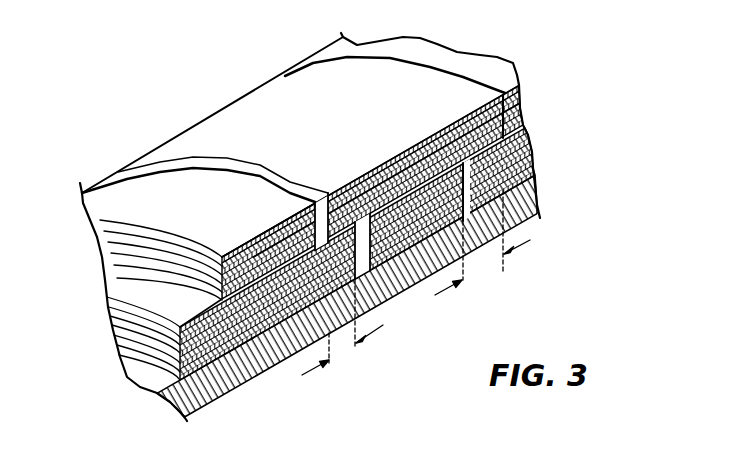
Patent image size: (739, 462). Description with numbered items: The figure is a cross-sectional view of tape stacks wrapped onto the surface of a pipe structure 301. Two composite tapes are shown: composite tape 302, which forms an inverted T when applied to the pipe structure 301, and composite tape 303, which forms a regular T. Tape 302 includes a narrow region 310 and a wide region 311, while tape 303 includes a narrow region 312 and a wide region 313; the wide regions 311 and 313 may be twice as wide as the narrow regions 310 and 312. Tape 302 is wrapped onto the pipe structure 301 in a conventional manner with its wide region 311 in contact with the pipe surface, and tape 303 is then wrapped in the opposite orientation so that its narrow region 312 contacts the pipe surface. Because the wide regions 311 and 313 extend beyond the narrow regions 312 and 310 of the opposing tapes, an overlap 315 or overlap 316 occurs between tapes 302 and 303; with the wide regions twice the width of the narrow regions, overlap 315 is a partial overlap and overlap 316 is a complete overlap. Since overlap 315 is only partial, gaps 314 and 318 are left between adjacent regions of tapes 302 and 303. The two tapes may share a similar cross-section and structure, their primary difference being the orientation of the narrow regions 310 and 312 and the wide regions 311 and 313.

The pipe structure 301 is at (223, 393).
The composite tape 302 is at (147, 193).
The composite tape 303 is at (280, 110).
The narrow region 310 is at (117, 234).
The wide region 311 is at (115, 280).
The narrow region 312 is at (390, 167).
The wide region 313 is at (413, 140).
The gap 314 is at (388, 299).
The overlap 315 is at (343, 350).
The overlap 316 is at (483, 267).
The gap 318 is at (315, 195).